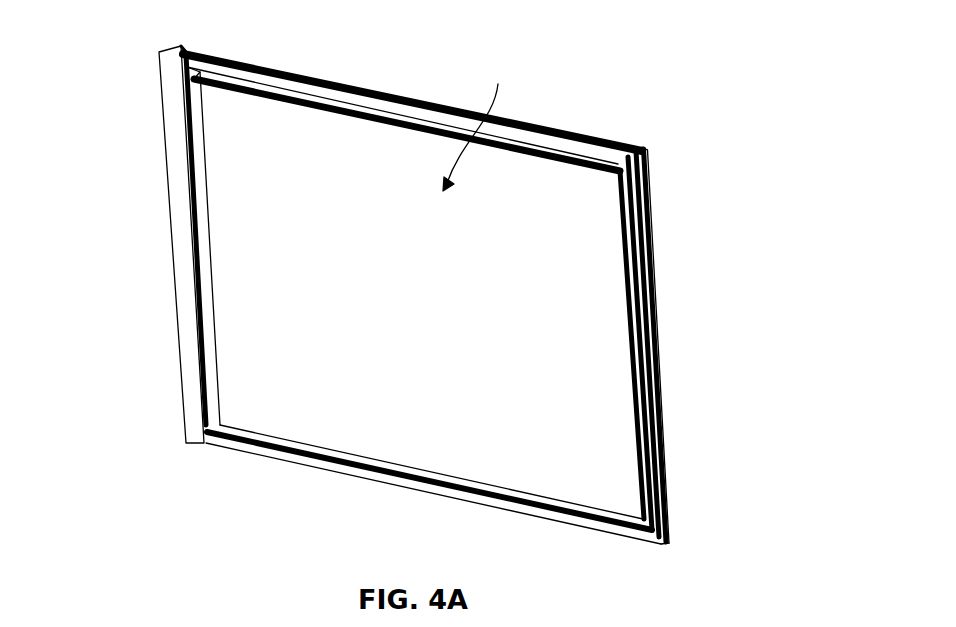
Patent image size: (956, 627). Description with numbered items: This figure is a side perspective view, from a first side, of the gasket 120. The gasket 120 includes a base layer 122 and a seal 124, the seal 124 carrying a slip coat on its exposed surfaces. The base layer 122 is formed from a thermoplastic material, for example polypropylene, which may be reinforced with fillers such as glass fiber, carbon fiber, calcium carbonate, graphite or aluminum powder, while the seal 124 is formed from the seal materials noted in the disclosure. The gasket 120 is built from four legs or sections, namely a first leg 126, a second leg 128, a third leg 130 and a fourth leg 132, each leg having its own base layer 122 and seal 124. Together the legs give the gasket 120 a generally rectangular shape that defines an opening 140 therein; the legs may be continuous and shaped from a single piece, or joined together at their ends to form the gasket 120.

The gasket 120 is at (688, 85).
The base layer 122 is at (646, 188).
The seal 124 is at (253, 88).
The first leg 126 is at (372, 107).
The second leg 128 is at (656, 412).
The third leg 130 is at (373, 478).
The fourth leg 132 is at (182, 180).
The opening 140 is at (481, 122).